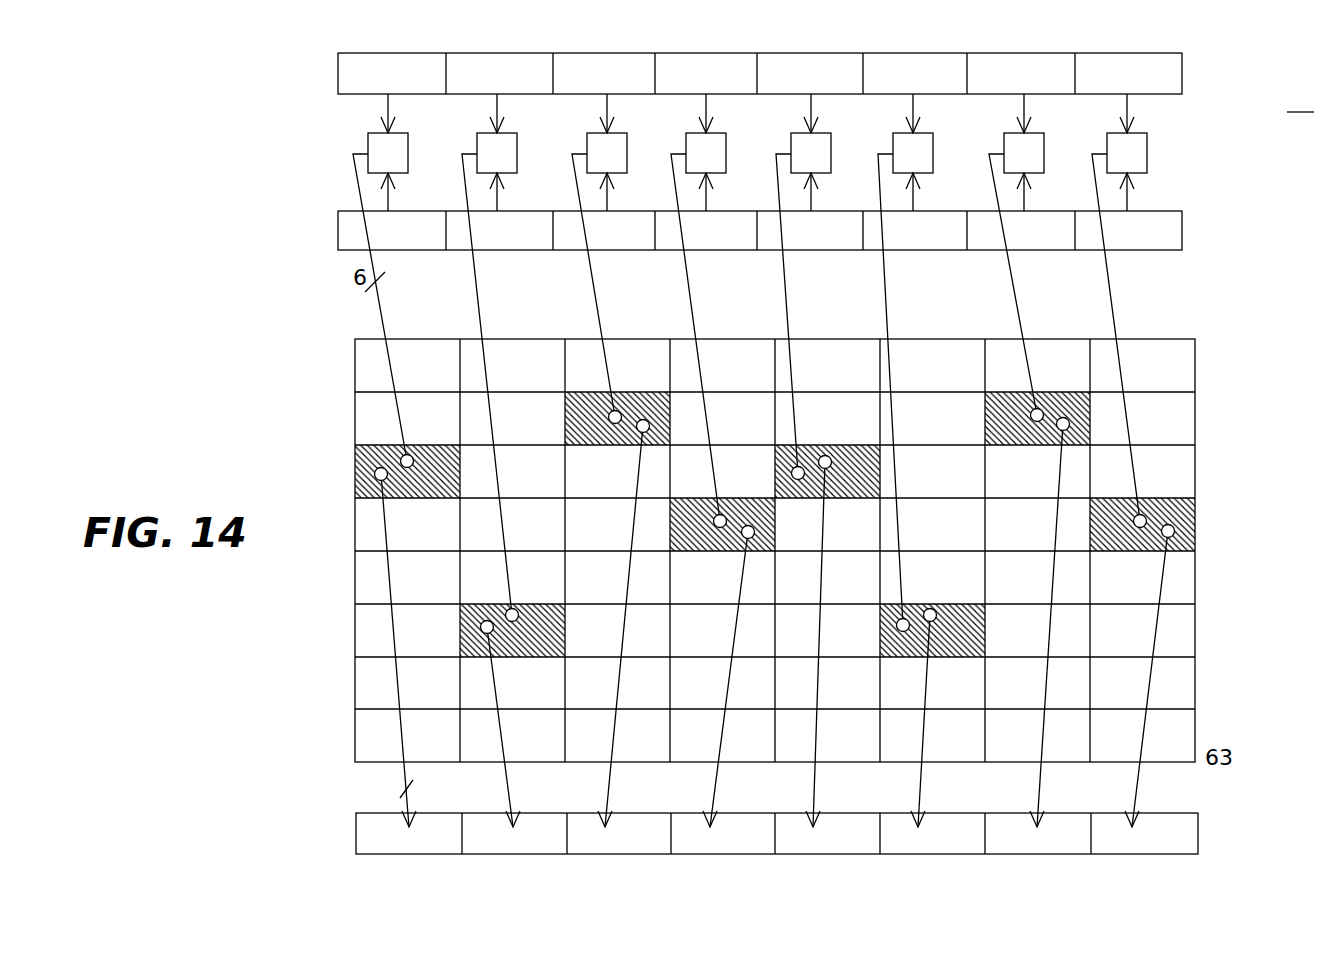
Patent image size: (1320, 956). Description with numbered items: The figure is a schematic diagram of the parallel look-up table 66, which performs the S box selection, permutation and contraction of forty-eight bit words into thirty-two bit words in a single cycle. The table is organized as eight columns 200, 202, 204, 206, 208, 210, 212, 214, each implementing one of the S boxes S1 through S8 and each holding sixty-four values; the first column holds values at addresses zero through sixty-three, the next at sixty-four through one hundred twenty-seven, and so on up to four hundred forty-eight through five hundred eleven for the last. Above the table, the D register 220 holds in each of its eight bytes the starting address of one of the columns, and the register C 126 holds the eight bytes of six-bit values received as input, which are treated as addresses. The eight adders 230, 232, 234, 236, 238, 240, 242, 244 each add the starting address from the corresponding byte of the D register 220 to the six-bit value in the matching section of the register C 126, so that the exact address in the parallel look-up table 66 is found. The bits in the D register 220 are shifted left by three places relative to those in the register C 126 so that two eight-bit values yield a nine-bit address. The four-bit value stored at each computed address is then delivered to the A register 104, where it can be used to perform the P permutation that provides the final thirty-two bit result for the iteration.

The parallel look-up table 66 is at (1301, 99).
The A register 104 is at (1198, 833).
The register C 126 is at (340, 211).
The D register 220 is at (400, 53).
The column 200 is at (1170, 339).
The column 202 is at (1060, 281).
The column 204 is at (948, 281).
The column 206 is at (842, 281).
The column 208 is at (742, 281).
The column 210 is at (640, 281).
The column 212 is at (529, 281).
The column 214 is at (434, 281).
The adder 230 is at (1147, 153).
The adder 232 is at (1044, 146).
The adder 234 is at (933, 146).
The adder 236 is at (831, 146).
The adder 238 is at (726, 146).
The adder 240 is at (627, 146).
The adder 242 is at (517, 146).
The adder 244 is at (408, 146).